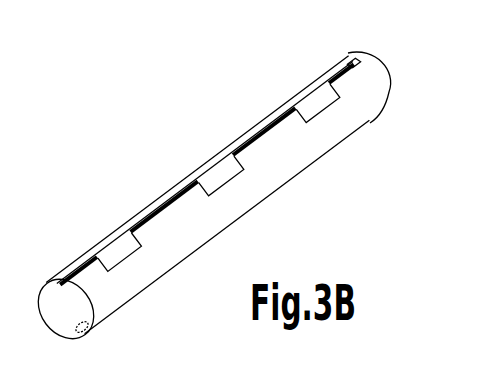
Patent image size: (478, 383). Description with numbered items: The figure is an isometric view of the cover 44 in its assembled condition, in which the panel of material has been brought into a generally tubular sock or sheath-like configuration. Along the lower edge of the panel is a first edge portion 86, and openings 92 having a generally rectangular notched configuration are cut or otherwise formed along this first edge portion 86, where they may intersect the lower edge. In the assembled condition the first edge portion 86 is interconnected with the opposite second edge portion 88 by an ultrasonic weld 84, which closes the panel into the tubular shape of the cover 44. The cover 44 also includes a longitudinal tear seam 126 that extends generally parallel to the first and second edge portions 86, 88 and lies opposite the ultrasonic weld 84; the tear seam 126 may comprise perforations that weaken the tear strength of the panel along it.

The cover 44 is at (243, 234).
The ultrasonic weld 84 is at (162, 205).
The first edge portion 86 is at (337, 72).
The second edge portion 88 is at (372, 68).
The openings 92 is at (113, 256).
The longitudinal tear seam 126 is at (88, 329).